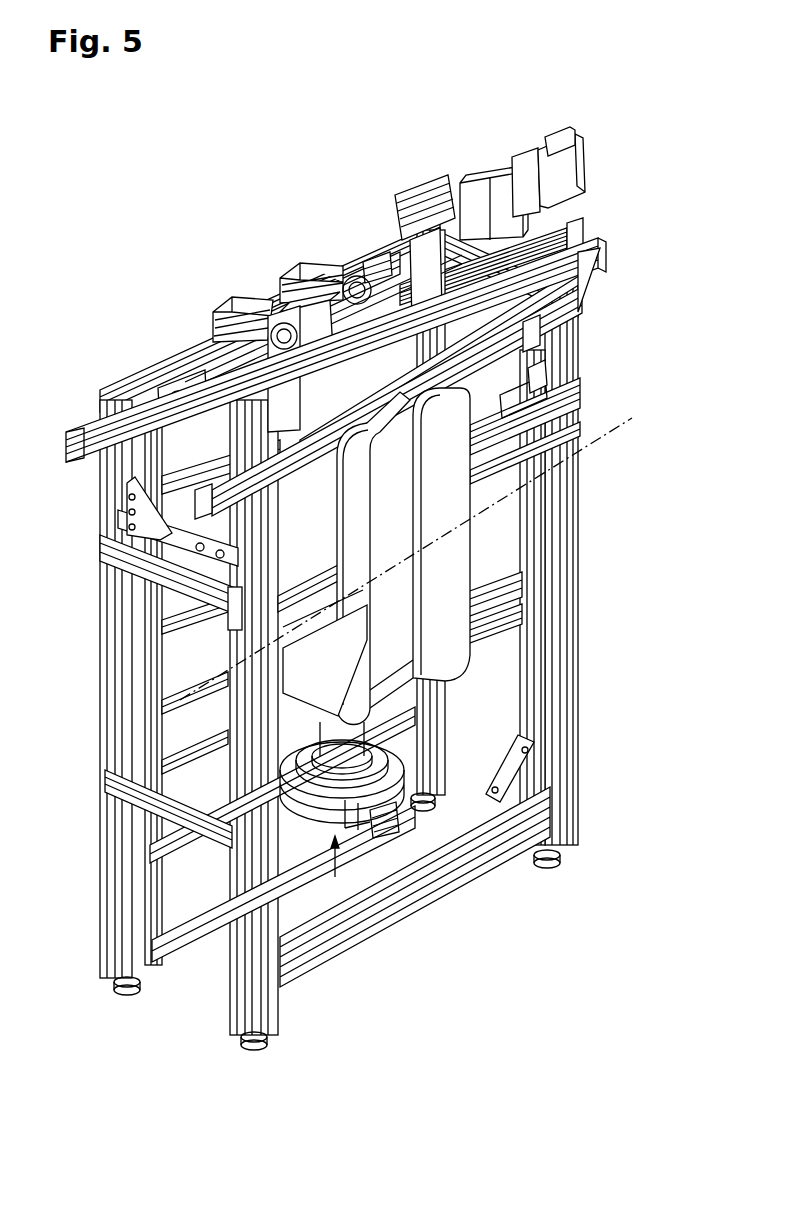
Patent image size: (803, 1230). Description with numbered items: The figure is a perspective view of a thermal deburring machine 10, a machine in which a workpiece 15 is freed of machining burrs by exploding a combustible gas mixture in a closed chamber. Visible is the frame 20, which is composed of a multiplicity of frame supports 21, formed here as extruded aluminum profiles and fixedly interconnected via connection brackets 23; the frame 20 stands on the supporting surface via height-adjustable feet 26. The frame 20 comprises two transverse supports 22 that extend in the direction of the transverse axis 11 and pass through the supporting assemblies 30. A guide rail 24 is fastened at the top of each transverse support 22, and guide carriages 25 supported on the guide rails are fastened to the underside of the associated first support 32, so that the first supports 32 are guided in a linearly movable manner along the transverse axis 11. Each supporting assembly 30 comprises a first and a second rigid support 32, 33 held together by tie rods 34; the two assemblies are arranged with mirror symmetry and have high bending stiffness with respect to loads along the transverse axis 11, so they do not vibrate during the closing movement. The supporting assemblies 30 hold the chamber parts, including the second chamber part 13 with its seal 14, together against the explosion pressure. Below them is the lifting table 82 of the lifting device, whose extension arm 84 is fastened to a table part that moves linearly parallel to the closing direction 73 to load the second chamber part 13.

The thermal deburring machine 10 is at (186, 206).
The transverse axis 11 is at (605, 445).
The second chamber part 13 is at (387, 820).
The seal 14 is at (370, 823).
The workpiece 15 is at (362, 752).
The frame 20 is at (310, 947).
The frame supports 21 is at (170, 382).
The transverse supports 22 is at (140, 530).
The connection brackets 23 is at (530, 335).
The guide rail 24 is at (137, 487).
The guide carriages 25 is at (217, 352).
The height-adjustable feet 26 is at (130, 978).
The supporting assemblies 30 is at (440, 607).
The first support 32 is at (250, 303).
The second support 33 is at (330, 695).
The tie rods 34 is at (420, 590).
The closing direction 73 is at (366, 875).
The lifting table 82 is at (407, 812).
The extension arm 84 is at (386, 828).